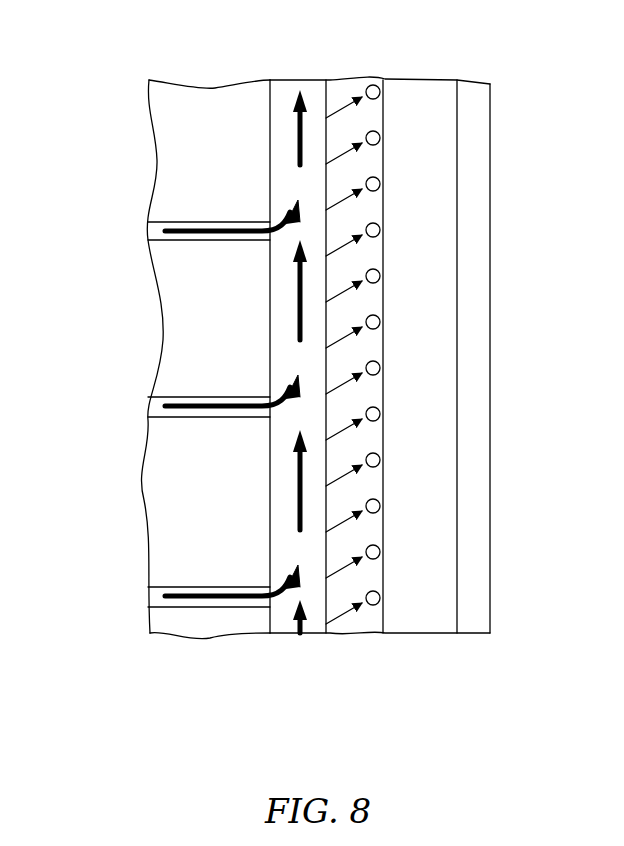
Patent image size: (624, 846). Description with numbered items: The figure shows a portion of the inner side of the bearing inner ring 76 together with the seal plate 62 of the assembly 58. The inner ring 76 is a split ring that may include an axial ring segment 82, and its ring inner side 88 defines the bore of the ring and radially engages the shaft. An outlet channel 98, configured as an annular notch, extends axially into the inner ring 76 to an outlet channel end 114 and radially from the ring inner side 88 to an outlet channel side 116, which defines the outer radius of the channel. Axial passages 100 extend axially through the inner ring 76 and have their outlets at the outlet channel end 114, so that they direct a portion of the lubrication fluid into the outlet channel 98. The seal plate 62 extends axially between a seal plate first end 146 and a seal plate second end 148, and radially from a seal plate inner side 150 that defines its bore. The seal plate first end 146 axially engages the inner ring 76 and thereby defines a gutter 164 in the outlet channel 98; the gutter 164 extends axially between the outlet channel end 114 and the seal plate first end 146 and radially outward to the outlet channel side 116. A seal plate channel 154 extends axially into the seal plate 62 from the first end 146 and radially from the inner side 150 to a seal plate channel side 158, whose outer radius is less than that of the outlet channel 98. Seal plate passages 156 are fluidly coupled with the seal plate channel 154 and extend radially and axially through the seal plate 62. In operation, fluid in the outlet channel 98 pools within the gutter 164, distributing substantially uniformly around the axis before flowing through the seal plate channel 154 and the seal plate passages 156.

The assembly 58 is at (96, 70).
The inner ring 76 is at (165, 80).
The axial ring segment 82 is at (165, 80).
The outlet channel 98 is at (278, 93).
The axial passages 100 is at (158, 242).
The outlet channel end 114 is at (272, 560).
The outlet channel side 116 is at (283, 510).
The gutter 164 is at (283, 624).
The seal plate channel 154 is at (344, 90).
The seal plate passages 156 is at (380, 123).
The seal plate channel side 158 is at (367, 624).
The seal plate first end 146 is at (332, 552).
The seal plate 62 is at (433, 79).
The seal plate inner side 150 is at (430, 605).
The seal plate second end 148 is at (490, 493).
The ring inner side 88 is at (211, 626).